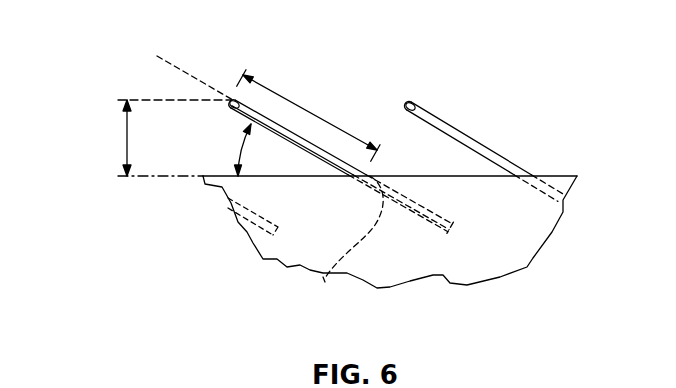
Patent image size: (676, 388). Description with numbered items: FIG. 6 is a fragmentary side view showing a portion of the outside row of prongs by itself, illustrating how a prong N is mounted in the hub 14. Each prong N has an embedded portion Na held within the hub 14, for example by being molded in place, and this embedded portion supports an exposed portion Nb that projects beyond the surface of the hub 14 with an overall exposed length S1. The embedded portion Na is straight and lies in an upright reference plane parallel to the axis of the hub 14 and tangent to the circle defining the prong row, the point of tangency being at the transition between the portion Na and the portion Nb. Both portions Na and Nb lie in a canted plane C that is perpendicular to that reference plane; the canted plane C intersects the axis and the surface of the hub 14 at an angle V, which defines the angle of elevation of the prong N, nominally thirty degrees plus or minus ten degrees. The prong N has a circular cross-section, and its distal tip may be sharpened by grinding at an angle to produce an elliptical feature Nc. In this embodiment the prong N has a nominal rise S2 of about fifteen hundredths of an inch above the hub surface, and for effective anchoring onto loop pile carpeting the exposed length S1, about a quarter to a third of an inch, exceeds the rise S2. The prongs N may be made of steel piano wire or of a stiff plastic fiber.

The hub 14 is at (543, 228).
The prong N is at (308, 153).
The embedded prong portion Na is at (346, 246).
The exposed portion Nb is at (318, 158).
The elliptical feature Nc is at (411, 104).
The canted plane C is at (177, 70).
The exposed prong length S1 is at (313, 113).
The rise S2 is at (126, 139).
The angle of elevation V is at (237, 147).